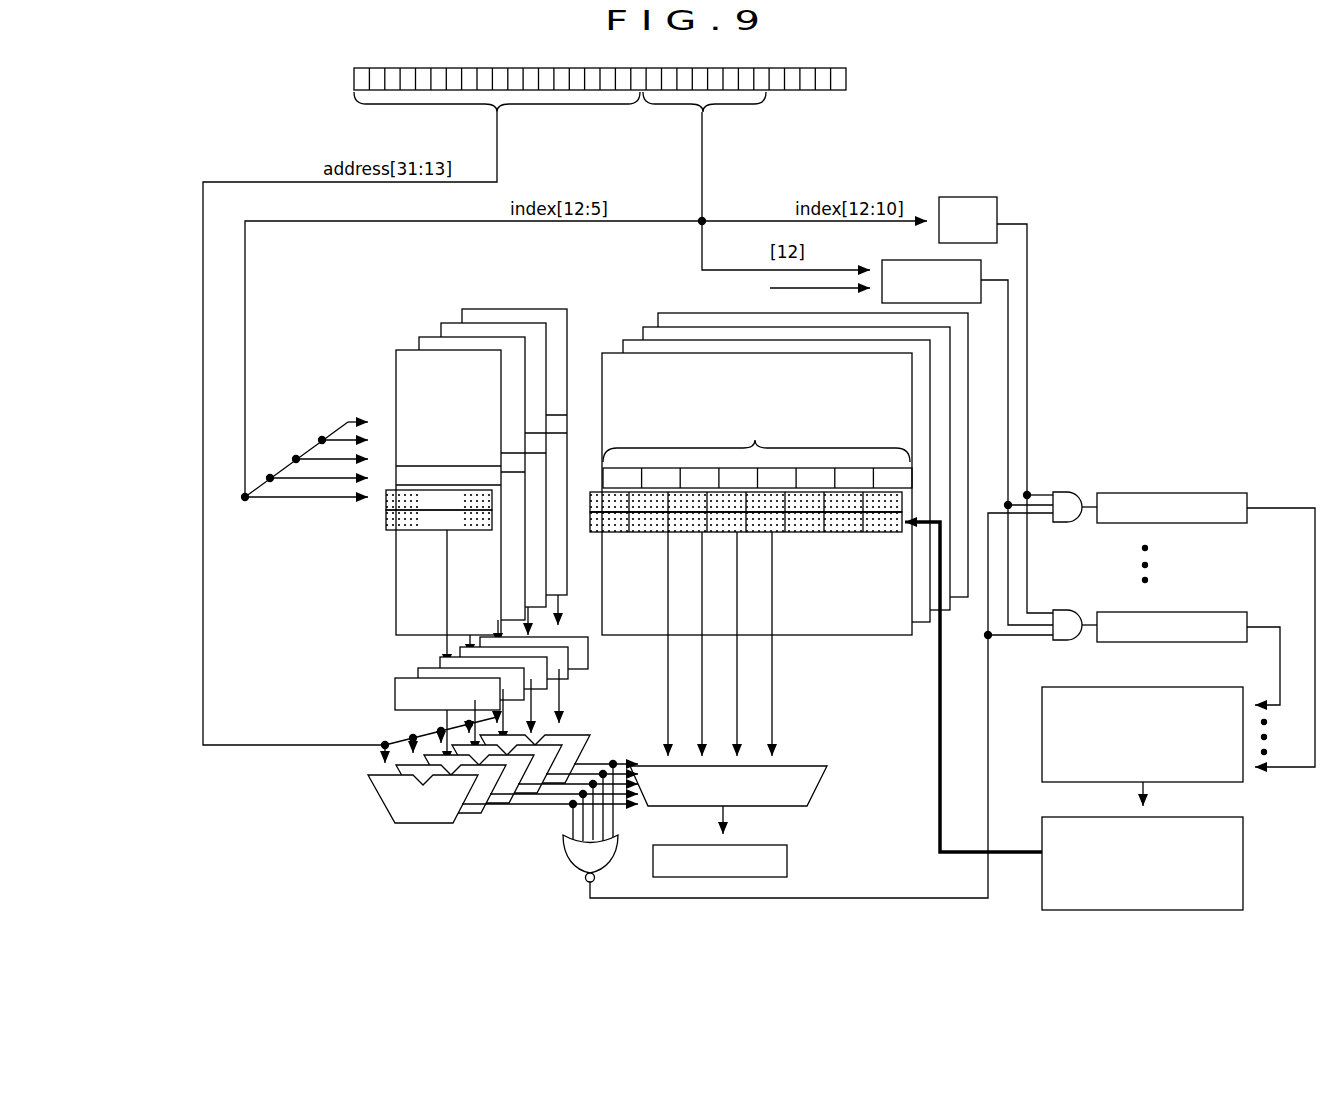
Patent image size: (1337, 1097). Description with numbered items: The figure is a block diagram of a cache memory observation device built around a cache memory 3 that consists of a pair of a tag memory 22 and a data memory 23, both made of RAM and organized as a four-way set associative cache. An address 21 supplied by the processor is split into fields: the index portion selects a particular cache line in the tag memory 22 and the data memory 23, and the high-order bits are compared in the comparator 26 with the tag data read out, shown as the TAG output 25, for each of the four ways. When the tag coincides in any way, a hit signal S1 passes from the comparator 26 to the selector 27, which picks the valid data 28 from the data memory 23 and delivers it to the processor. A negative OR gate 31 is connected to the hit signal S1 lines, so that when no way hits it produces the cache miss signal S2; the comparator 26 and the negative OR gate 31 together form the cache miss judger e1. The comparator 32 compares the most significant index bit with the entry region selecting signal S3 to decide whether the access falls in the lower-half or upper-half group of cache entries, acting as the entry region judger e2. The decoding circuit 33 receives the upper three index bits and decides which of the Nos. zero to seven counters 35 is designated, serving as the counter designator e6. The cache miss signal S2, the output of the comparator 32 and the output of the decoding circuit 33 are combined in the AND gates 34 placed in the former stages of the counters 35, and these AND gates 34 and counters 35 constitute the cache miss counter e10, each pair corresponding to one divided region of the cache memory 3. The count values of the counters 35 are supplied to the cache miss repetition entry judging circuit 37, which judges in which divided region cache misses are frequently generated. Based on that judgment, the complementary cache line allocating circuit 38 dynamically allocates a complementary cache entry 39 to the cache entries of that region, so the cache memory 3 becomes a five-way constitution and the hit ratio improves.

The cache memory 3 is at (382, 318).
The address 21 is at (354, 78).
The tag memory 22 is at (395, 596).
The data memory 23 is at (800, 640).
The TAG output 25 is at (395, 696).
The comparator 26 is at (374, 810).
The selector 27 is at (814, 766).
The valid data 28 is at (786, 846).
The negative OR (NOR) gate 31 is at (565, 870).
The comparator 32 is at (886, 261).
The decoding circuit 33 is at (980, 197).
The AND gates 34 is at (1068, 492).
The Nos. 0-7 counters 35 is at (1196, 494).
The cache miss repetition entry judging circuit 37 is at (1135, 687).
The complementary cache line allocating circuit 38 is at (1200, 817).
The complementary cache entry 39 is at (383, 524).
The cache miss judger e1 is at (293, 805).
The entry region judger e2 is at (1042, 273).
The counter designator e6 is at (1033, 198).
The cache miss counter e10 is at (1200, 453).
The hit signal S1 is at (544, 810).
The cache miss signal S2 is at (821, 705).
The entry region selecting signal S3 is at (649, 289).